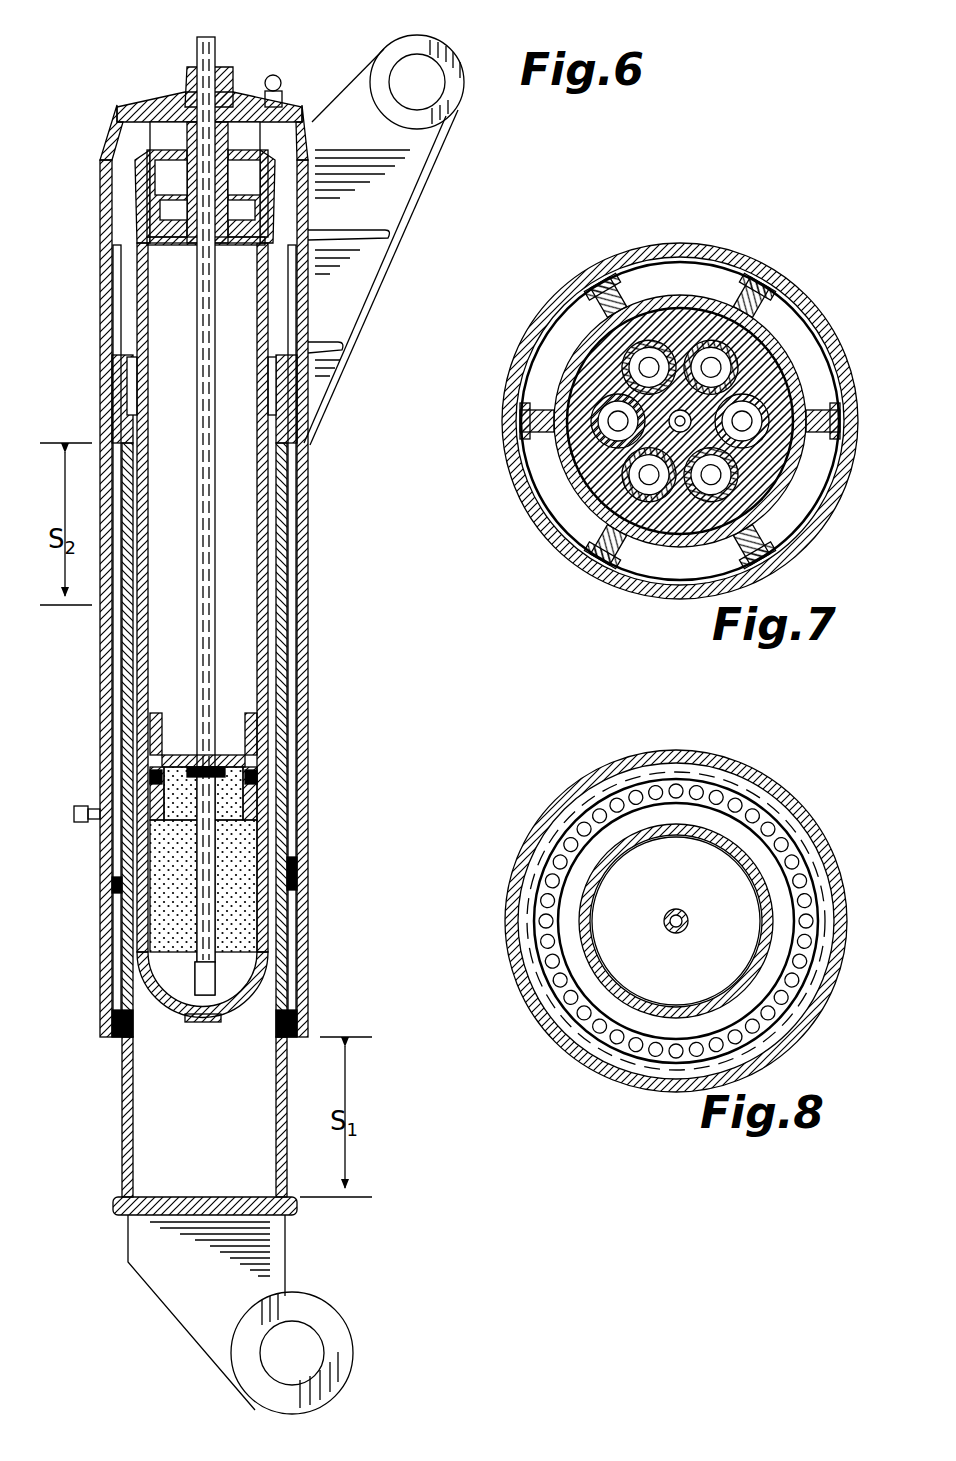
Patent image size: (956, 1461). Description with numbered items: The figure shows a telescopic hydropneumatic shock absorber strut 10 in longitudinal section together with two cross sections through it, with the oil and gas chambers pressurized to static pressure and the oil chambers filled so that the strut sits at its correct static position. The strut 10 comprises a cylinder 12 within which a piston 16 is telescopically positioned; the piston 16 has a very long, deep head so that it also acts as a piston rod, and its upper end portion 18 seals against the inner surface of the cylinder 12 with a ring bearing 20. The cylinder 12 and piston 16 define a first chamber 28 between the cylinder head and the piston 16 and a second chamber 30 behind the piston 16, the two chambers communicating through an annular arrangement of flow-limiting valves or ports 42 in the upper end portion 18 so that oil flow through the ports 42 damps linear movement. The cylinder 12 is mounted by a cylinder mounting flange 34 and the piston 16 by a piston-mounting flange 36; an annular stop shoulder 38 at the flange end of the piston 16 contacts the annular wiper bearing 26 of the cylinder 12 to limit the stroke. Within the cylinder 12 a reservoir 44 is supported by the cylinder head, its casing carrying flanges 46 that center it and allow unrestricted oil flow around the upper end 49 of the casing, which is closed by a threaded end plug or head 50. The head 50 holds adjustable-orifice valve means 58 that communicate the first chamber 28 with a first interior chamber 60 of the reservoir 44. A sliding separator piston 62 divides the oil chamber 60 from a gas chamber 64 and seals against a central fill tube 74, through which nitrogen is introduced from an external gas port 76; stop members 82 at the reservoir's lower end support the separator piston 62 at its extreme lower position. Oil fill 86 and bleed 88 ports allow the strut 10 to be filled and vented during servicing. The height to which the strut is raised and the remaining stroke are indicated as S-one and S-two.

In FIG. 6, the telescopic hydropneumatic shock absorber strut 10 is at (345, 636).
In FIG. 6, the cylinder 12 is at (305, 690).
In FIG. 7, the cylinder 12 is at (755, 262).
In FIG. 8, the cylinder 12 is at (570, 800).
In FIG. 6, the piston 16 is at (290, 600).
In FIG. 8, the upper end portion 18 is at (608, 790).
In FIG. 8, the ring bearing 20 is at (745, 770).
In FIG. 6, the annular wiper bearing 26 is at (293, 1005).
In FIG. 6, the first chamber 28 is at (140, 1148).
In FIG. 7, the first chamber 28 is at (690, 268).
In FIG. 8, the first chamber 28 is at (700, 790).
In FIG. 6, the second chamber 30 is at (290, 565).
In FIG. 6, the cylinder mounting flange 34 is at (405, 158).
In FIG. 6, the piston-mounting flange 36 is at (265, 1282).
In FIG. 6, the annular stop shoulder 38 is at (290, 1198).
In FIG. 6, the flow-limiting valves or ports 42 is at (125, 432).
In FIG. 8, the flow-limiting valves or ports 42 is at (775, 835).
In FIG. 6, the reservoir 44 is at (262, 530).
In FIG. 8, the reservoir 44 is at (590, 905).
In FIG. 7, the flanges 46 is at (760, 298).
In FIG. 7, the upper end of the reservoir casing 49 is at (625, 550).
In FIG. 6, the end plug or head 50 is at (140, 225).
In FIG. 7, the end plug or head 50 is at (660, 318).
In FIG. 6, the adjustable-orifice valve means 58 is at (160, 152).
In FIG. 7, the adjustable-orifice valve means 58 is at (712, 365).
In FIG. 6, the first interior chamber 60 is at (160, 310).
In FIG. 6, the separator piston 62 is at (262, 762).
In FIG. 6, the gas chamber 64 is at (170, 860).
In FIG. 8, the gas chamber 64 is at (740, 945).
In FIG. 6, the fill tube 74 is at (200, 655).
In FIG. 7, the fill tube 74 is at (690, 435).
In FIG. 8, the fill tube 74 is at (690, 918).
In FIG. 6, the gas port 76 is at (128, 485).
In FIG. 6, the stop members 82 is at (245, 978).
In FIG. 6, the oil fill port 86 is at (80, 805).
In FIG. 6, the bleed port 88 is at (276, 76).